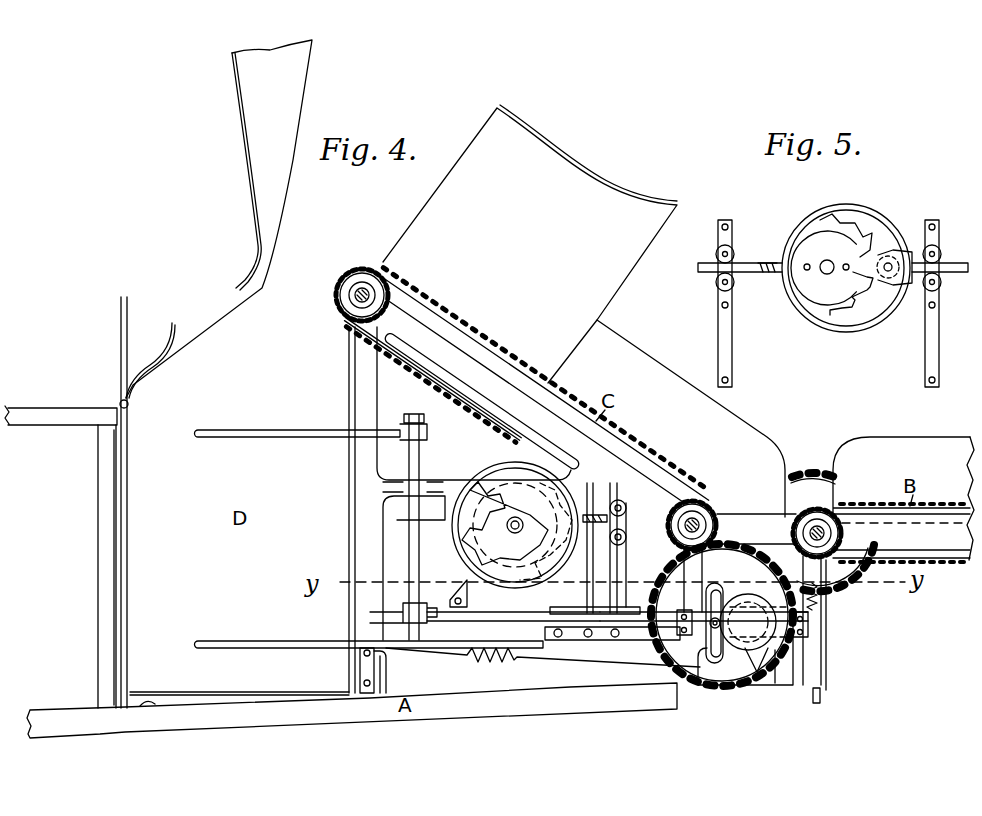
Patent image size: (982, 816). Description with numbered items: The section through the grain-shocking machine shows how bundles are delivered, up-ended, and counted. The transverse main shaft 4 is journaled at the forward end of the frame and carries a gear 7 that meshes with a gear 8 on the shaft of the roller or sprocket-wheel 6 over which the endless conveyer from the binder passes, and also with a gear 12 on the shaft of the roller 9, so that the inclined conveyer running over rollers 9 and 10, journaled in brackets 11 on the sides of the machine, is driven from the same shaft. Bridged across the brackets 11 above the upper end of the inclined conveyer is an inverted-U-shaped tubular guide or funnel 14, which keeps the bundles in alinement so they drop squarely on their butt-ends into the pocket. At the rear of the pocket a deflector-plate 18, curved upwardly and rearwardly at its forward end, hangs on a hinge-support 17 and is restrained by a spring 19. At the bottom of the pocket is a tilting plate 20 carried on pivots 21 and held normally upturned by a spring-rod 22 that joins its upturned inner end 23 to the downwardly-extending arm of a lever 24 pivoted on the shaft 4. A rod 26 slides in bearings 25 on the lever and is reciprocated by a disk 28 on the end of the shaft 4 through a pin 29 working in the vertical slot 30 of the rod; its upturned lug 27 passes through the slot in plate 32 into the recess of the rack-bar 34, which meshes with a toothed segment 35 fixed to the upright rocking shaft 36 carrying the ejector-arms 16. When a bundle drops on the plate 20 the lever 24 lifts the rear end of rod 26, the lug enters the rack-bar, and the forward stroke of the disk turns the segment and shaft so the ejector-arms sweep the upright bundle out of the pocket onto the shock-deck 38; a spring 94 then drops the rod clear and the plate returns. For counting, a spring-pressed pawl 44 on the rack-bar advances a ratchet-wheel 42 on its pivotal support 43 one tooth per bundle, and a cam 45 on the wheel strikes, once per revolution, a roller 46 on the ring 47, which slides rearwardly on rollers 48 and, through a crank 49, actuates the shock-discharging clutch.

In FIG. 4, the main shaft 4 is at (757, 676).
In FIG. 4, the roller or sprocket-wheel 6 is at (845, 535).
In FIG. 4, the gear 7 is at (775, 684).
In FIG. 4, the gear 8 is at (817, 473).
In FIG. 4, the roller or sprocket-wheel 9 is at (695, 505).
In FIG. 4, the roller or sprocket-wheel 10 is at (336, 297).
In FIG. 4, the brackets 11 is at (481, 401).
In FIG. 4, the gear 12 is at (571, 406).
In FIG. 4, the inverted-U-shaped tubular guide or funnel 14 is at (530, 244).
In FIG. 4, the ejector-arms 16 is at (229, 437).
In FIG. 4, the hinge-support 17 is at (129, 406).
In FIG. 4, the deflector-plate 18 is at (219, 219).
In FIG. 4, the spring 19 is at (170, 328).
In FIG. 4, the tilting plate 20 is at (195, 698).
In FIG. 4, the pivots 21 is at (388, 686).
In FIG. 4, the spring-rod 22 is at (560, 661).
In FIG. 4, the upturned inner end 23 is at (360, 662).
In FIG. 4, the lever 24 is at (782, 637).
In FIG. 4, the bearings 25 is at (677, 629).
In FIG. 4, the rod 26 is at (641, 627).
In FIG. 4, the upturned lug 27 is at (550, 633).
In FIG. 4, the disk 28 is at (785, 650).
In FIG. 4, the pin 29 is at (709, 641).
In FIG. 4, the vertical slot 30 is at (713, 676).
In FIG. 4, the plate 32 is at (594, 600).
In FIG. 4, the rack-bar 34 is at (495, 613).
In FIG. 4, the toothed segment 35 is at (370, 615).
In FIG. 4, the upright rocking shaft 36 is at (420, 449).
In FIG. 4, the shock-deck 38 is at (155, 704).
In FIG. 4, the ratchet-wheel 42 is at (513, 481).
In FIG. 5, the ratchet-wheel 42 is at (841, 226).
In FIG. 4, the pivotal support 43 is at (505, 535).
In FIG. 4, the spring-pressed pawl 44 is at (466, 588).
In FIG. 5, the cam 45 is at (823, 268).
In FIG. 5, the roller 46 is at (887, 258).
In FIG. 4, the ring 47 is at (470, 551).
In FIG. 5, the ring 47 is at (845, 326).
In FIG. 4, the rollers 48 is at (678, 563).
In FIG. 5, the rollers 48 is at (717, 284).
In FIG. 4, the crank 49 is at (592, 512).
In FIG. 5, the crank 49 is at (763, 263).
In FIG. 4, the spring 94 is at (820, 602).